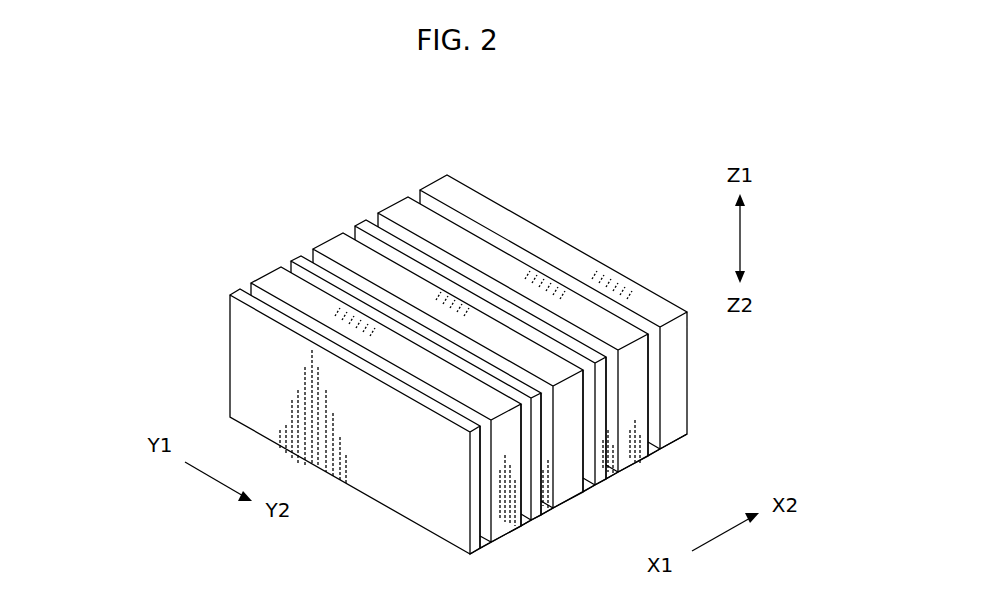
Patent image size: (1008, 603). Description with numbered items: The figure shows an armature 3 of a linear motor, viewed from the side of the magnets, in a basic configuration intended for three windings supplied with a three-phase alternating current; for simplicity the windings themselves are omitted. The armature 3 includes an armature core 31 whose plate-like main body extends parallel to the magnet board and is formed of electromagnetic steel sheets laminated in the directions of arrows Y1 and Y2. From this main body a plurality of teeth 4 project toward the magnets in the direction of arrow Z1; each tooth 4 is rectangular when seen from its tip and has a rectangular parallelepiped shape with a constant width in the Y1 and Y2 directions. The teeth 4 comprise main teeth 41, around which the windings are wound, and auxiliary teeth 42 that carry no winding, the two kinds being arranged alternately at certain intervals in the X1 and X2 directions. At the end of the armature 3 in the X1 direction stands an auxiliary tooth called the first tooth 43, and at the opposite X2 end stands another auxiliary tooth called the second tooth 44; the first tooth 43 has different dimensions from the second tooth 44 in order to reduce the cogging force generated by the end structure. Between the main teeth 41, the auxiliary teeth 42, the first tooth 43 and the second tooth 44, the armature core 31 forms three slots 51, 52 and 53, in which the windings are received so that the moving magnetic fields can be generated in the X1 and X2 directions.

The armature 3 is at (550, 196).
The armature core 31 is at (647, 440).
The teeth 4 is at (436, 92).
The main teeth 41 is at (270, 277).
The auxiliary teeth 42 is at (303, 267).
The first tooth 43 is at (240, 292).
The second tooth 44 is at (443, 173).
The slot 51 is at (480, 507).
The slot 52 is at (548, 478).
The slot 53 is at (610, 413).